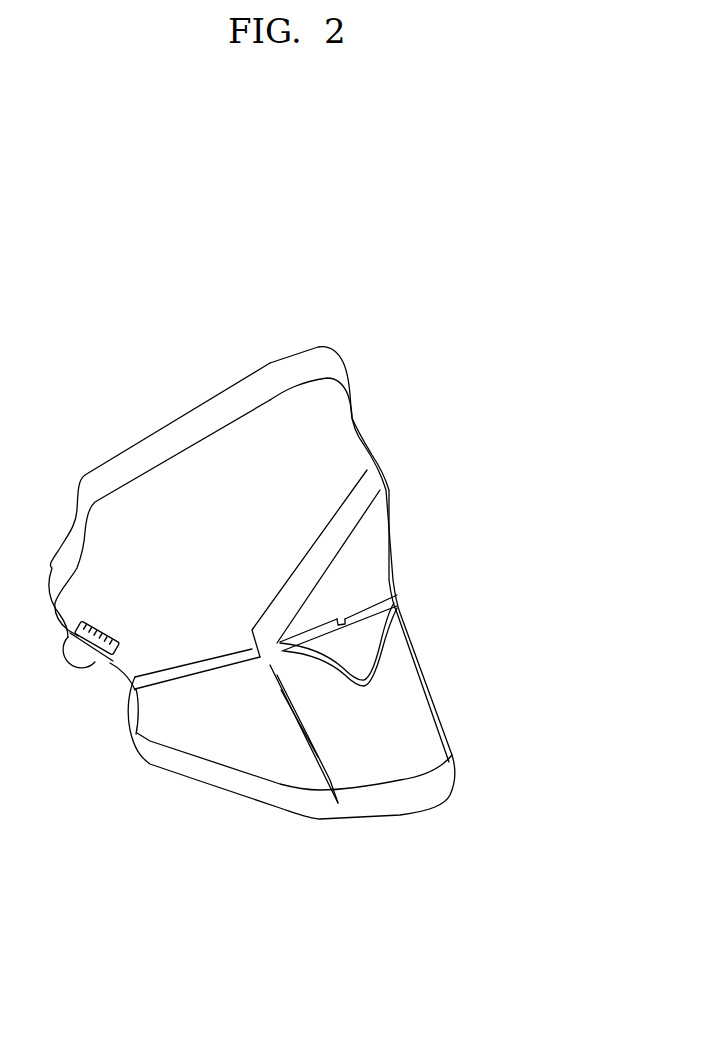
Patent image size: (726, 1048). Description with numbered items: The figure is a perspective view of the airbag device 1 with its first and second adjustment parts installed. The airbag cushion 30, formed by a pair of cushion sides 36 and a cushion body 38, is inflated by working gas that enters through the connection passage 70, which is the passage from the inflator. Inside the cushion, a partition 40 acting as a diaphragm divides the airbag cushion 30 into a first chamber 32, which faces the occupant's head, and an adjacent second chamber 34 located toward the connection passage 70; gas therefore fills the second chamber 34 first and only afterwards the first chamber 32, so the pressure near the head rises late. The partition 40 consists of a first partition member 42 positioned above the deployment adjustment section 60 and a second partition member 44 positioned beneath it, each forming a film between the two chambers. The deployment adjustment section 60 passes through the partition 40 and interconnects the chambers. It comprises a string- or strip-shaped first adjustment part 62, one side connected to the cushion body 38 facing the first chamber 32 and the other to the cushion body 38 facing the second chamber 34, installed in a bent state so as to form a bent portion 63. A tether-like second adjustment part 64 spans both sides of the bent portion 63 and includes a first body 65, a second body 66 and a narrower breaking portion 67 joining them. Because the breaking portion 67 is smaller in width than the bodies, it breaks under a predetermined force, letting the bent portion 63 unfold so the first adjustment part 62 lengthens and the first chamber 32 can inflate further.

The airbag device 1 is at (377, 294).
The airbag cushion 30 is at (252, 628).
The first chamber 32 is at (370, 563).
The second chamber 34 is at (312, 486).
The cushion sides 36 is at (395, 763).
The cushion body 38 is at (420, 877).
The partition 40 is at (346, 476).
The first partition member 42 is at (352, 510).
The second partition member 44 is at (320, 757).
The deployment adjustment section 60 is at (314, 698).
The first adjustment part 62 is at (230, 658).
The bent portion 63 is at (364, 681).
The second adjustment part 64 is at (383, 585).
The first body 65 is at (320, 620).
The second body 66 is at (396, 597).
The breaking portion 67 is at (337, 617).
The connection passage 70 is at (110, 663).